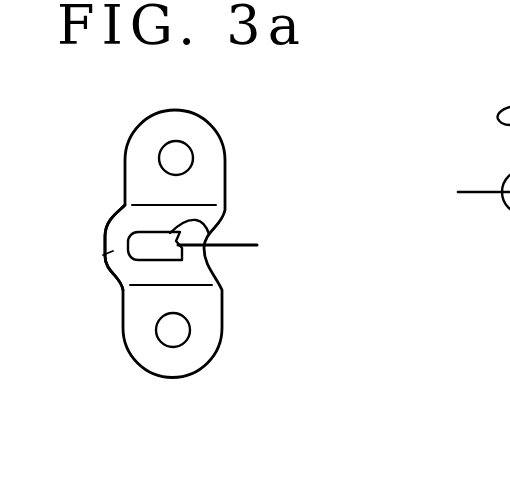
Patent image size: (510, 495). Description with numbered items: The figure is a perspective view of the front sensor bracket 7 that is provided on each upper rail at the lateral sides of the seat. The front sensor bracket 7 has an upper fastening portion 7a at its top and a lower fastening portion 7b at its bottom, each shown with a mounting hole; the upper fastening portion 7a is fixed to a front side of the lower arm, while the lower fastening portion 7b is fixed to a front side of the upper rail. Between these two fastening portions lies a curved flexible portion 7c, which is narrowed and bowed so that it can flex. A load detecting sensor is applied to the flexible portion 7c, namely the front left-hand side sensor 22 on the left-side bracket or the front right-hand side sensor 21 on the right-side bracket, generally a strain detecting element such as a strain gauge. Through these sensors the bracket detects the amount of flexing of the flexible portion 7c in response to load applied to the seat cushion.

The front sensor bracket 7 is at (238, 159).
The upper fastening portion 7a is at (224, 183).
The lower fastening portion 7b is at (222, 318).
The flexible portion 7c is at (104, 257).
The front left-hand side sensor 22 is at (208, 230).
The front right-hand side sensor 21 is at (257, 226).